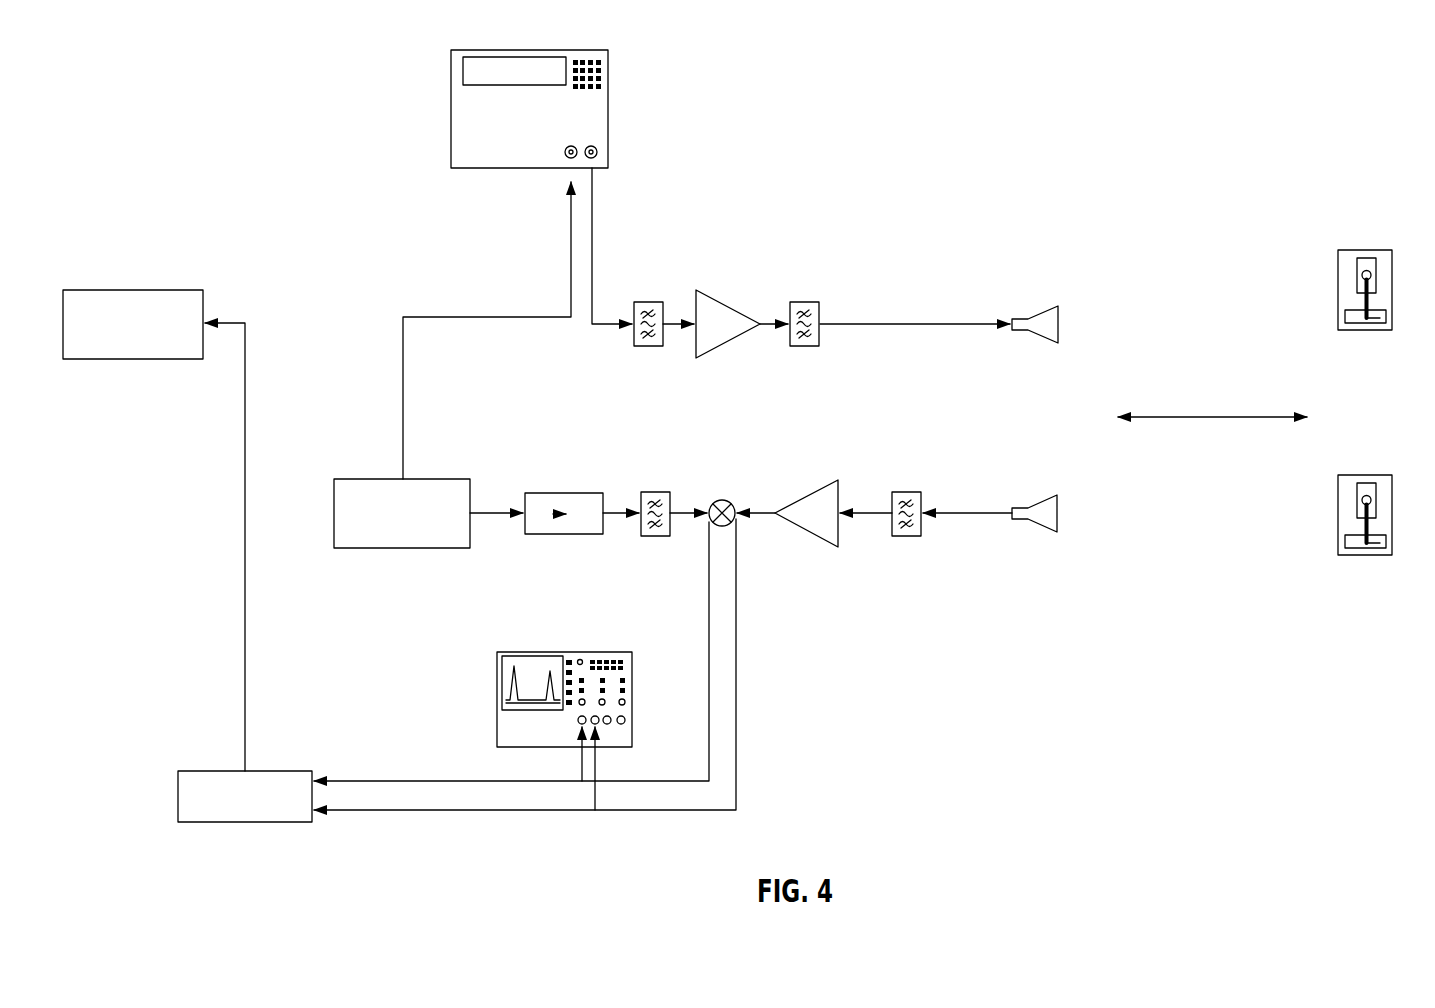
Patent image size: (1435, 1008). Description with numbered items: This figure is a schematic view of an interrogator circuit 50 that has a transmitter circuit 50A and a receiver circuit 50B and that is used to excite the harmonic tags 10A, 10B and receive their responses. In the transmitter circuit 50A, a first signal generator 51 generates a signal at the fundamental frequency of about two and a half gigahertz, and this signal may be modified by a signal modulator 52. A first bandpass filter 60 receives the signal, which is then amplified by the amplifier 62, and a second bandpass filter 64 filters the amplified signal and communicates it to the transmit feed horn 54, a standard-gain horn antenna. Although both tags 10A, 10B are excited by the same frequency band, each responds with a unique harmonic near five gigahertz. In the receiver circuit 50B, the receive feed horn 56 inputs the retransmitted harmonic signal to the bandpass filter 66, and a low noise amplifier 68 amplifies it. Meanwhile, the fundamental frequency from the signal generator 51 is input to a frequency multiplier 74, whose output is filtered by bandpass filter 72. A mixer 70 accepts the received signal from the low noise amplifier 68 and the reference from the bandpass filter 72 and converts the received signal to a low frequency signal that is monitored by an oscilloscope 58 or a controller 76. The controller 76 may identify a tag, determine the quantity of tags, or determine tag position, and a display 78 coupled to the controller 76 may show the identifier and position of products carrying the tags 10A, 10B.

The interrogator circuit 50 is at (1310, 150).
The transmitter circuit 50A is at (926, 261).
The receiver circuit 50B is at (975, 613).
The tag 10A is at (1366, 249).
The tag 10B is at (1366, 474).
The first signal generator 51 is at (334, 500).
The signal modulator 52 is at (500, 49).
The transmit feed horn 54 is at (1043, 315).
The receive feed horn 56 is at (1043, 528).
The oscilloscope 58 is at (549, 652).
The first bandpass filter 60 is at (652, 302).
The amplifier 62 is at (730, 308).
The second bandpass filter 64 is at (811, 302).
The bandpass filter 66 is at (905, 537).
The low noise amplifier 68 is at (808, 531).
The mixer 70 is at (716, 501).
The bandpass filter 72 is at (652, 493).
The frequency multiplier 74 is at (563, 493).
The controller 76 is at (178, 797).
The display 78 is at (113, 290).